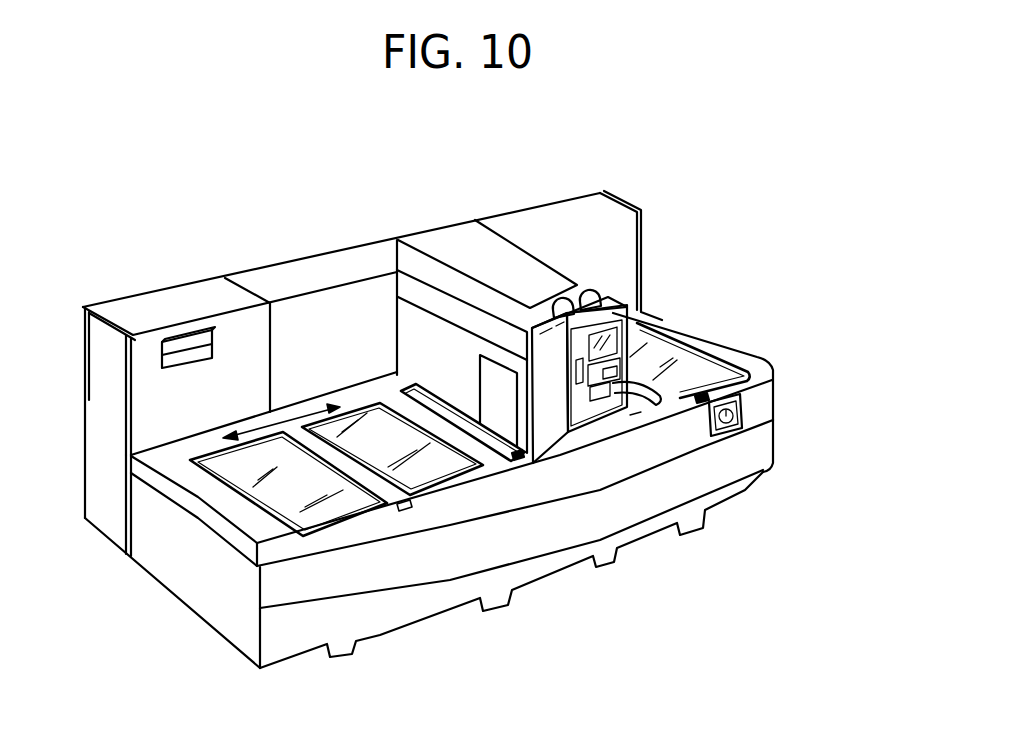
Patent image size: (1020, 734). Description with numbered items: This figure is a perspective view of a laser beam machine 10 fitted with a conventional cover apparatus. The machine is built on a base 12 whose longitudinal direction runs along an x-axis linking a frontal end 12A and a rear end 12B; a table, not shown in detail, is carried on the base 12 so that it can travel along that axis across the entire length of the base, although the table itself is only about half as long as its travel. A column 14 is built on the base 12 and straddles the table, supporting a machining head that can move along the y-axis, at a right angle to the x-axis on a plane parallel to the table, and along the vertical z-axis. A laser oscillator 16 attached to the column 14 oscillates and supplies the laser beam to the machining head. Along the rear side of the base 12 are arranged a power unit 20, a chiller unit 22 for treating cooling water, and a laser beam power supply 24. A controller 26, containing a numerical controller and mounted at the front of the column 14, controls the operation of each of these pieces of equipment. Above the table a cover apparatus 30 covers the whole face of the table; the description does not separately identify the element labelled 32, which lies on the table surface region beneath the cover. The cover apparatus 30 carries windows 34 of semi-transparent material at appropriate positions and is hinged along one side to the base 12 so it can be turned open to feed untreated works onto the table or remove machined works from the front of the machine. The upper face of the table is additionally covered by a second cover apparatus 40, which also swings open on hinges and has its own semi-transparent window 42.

The laser beam machine 10 is at (697, 284).
The base 12 is at (550, 548).
The frontal end 12A is at (223, 620).
The rear end 12B is at (702, 330).
The column 14 is at (556, 415).
The laser oscillator 16 is at (453, 243).
The power unit 20 is at (157, 305).
The chiller unit 22 is at (300, 270).
The laser beam power supply 24 is at (551, 214).
The controller 26 is at (668, 400).
The cover apparatus 30 is at (293, 538).
The table surface 32 is at (208, 493).
The windows 34 is at (427, 470).
The second cover apparatus 40 is at (752, 360).
The window 42 is at (742, 387).